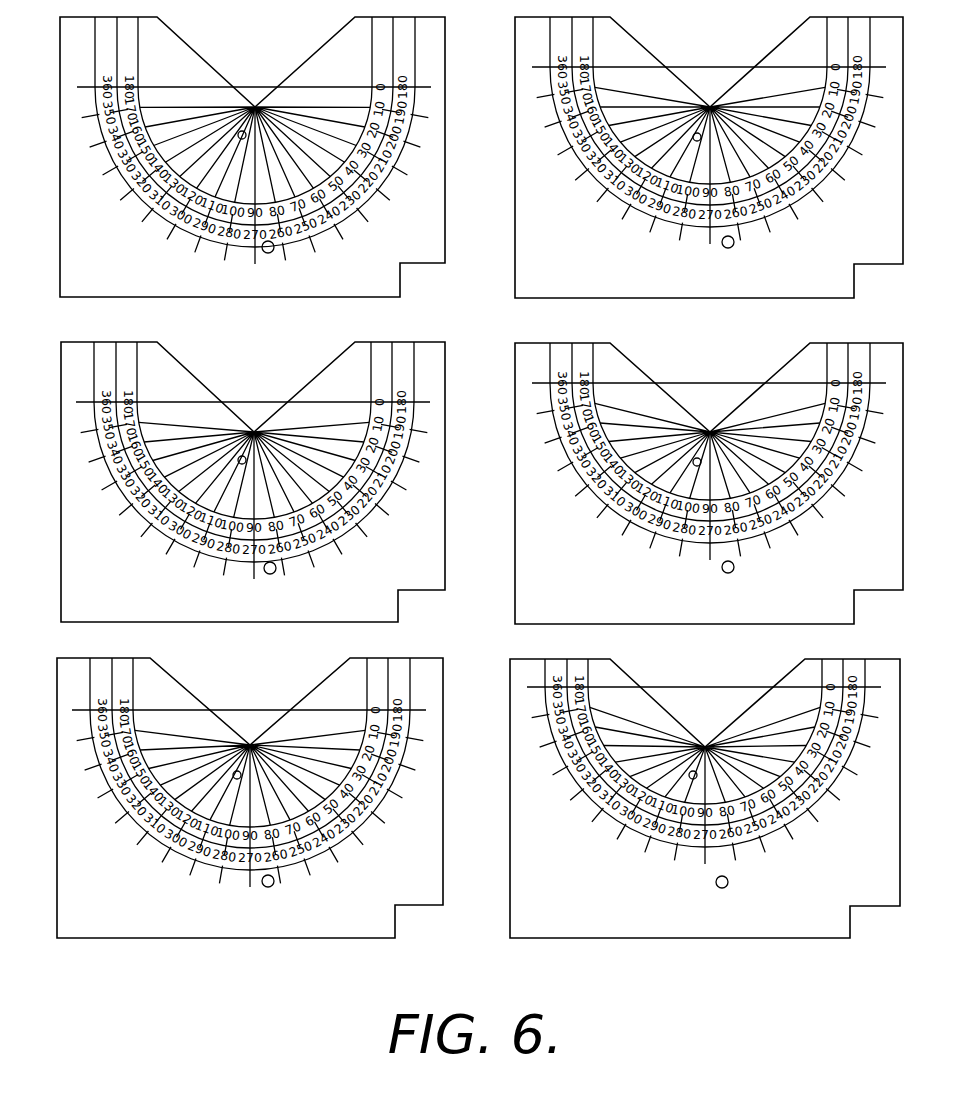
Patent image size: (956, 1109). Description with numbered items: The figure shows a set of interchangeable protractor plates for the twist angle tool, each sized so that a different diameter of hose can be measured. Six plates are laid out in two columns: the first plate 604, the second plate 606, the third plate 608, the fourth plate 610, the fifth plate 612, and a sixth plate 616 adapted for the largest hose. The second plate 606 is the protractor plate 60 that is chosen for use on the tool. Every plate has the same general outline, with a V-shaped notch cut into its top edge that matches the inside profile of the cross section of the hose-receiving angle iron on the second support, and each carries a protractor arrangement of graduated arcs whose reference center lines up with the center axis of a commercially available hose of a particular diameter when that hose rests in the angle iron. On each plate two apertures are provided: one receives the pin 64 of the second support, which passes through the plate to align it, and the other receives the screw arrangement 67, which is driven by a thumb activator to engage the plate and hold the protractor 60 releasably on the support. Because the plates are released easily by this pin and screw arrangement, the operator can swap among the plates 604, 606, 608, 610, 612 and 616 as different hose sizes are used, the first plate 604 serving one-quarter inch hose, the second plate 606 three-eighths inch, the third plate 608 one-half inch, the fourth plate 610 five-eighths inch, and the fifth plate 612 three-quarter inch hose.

The protractor plate 60 is at (227, 482).
The pin 64 is at (246, 458).
The screw arrangement 67 is at (272, 574).
The first plate 604 is at (60, 147).
The second plate 606 is at (227, 482).
The third plate 608 is at (57, 795).
The fourth plate 610 is at (515, 173).
The fifth plate 612 is at (515, 483).
The protractor plate variant 616 is at (510, 780).